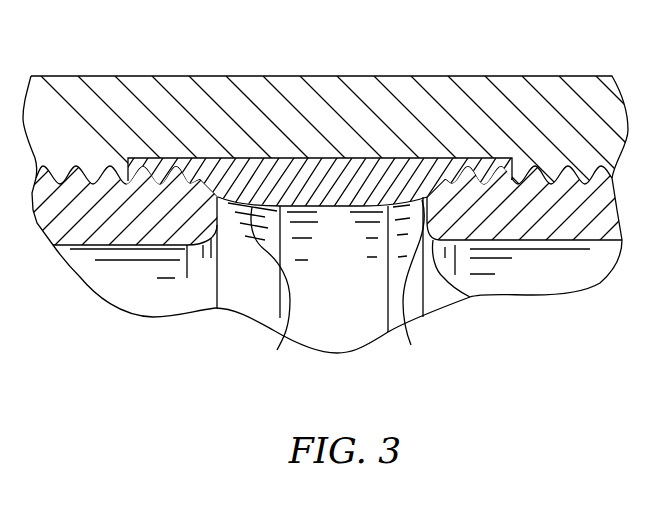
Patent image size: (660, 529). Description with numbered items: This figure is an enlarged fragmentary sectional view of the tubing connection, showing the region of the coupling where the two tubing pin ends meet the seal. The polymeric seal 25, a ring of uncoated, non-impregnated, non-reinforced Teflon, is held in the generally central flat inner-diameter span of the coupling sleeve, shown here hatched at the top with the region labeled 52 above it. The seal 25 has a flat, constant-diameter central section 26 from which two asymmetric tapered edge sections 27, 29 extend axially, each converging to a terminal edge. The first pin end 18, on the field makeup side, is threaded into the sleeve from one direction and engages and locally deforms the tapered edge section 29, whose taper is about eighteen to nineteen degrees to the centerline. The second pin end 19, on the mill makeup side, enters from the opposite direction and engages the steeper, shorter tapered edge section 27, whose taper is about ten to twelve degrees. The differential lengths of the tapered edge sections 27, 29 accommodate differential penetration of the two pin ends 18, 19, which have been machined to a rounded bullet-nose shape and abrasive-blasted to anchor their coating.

The substrate layer 52 is at (533, 76).
The polymeric seal 25 is at (370, 158).
The first pin end 18 is at (215, 218).
The second pin end 19 is at (460, 292).
The central section 26 is at (333, 207).
The tapered edge section 29 is at (271, 288).
The tapered edge section 27 is at (412, 283).